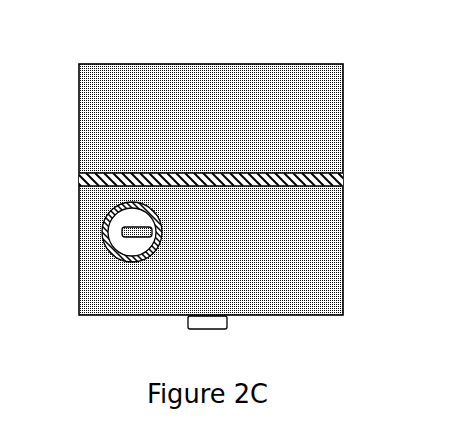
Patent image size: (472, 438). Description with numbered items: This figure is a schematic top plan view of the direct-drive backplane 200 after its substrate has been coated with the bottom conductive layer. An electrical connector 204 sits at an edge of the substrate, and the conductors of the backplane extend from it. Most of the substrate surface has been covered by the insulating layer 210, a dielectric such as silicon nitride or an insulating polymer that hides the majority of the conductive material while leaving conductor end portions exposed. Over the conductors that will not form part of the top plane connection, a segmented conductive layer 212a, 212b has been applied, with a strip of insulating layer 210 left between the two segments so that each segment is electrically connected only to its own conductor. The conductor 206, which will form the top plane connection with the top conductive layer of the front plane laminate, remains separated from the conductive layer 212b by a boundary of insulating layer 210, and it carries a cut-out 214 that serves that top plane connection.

The direct-drive backplane 200 is at (360, 79).
The segmented conductive layer 212a is at (343, 132).
The segmented conductive layer 212b is at (343, 232).
The insulating layer 210 is at (79, 175).
The cut-out 214 is at (117, 249).
The conductor 206 is at (123, 233).
The electrical connector 204 is at (228, 323).